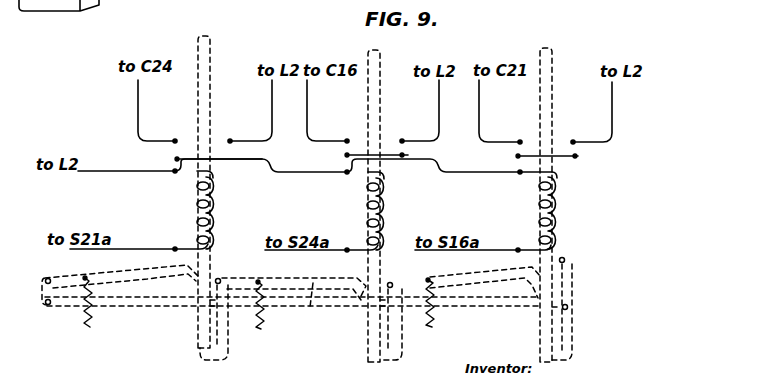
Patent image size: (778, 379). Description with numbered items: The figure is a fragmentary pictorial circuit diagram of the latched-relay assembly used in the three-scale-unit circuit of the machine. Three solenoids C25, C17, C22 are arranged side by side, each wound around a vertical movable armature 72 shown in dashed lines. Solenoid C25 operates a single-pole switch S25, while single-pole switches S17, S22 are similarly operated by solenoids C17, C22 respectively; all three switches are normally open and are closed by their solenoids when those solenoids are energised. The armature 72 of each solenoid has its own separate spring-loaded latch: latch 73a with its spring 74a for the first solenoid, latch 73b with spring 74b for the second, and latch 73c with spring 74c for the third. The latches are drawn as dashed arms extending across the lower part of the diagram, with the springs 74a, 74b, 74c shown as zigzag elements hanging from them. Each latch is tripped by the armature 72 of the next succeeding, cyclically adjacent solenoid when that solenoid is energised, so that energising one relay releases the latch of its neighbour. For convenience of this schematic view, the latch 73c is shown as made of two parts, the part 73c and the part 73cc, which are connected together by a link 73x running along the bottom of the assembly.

The armature 72 is at (210, 50).
The latch 73a is at (294, 303).
The latch 73b is at (485, 284).
The latch 73c is at (120, 285).
The link 73x is at (354, 309).
The latch part 73cc is at (567, 323).
The latch spring 74a is at (261, 327).
The latch spring 74b is at (432, 323).
The latch spring 74c is at (90, 324).
The single-pole switch S25 is at (200, 155).
The single-pole switch S17 is at (358, 155).
The single-pole switch S22 is at (563, 158).
The solenoid C25 is at (225, 210).
The solenoid C17 is at (394, 211).
The solenoid C22 is at (567, 210).